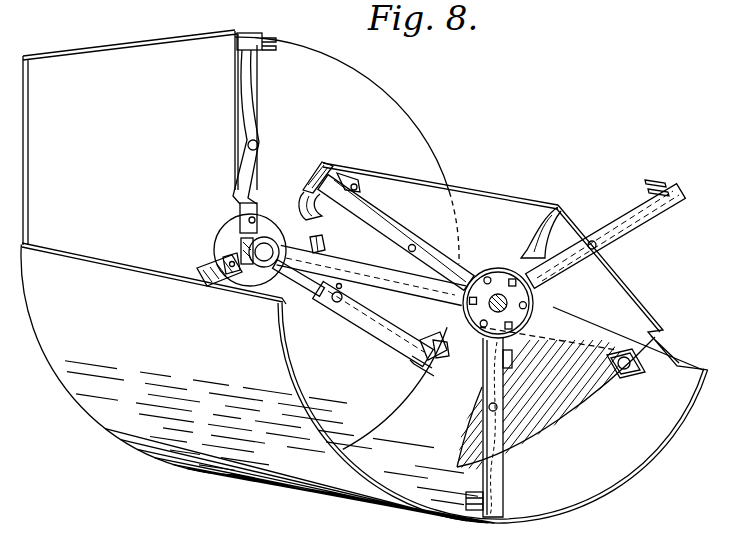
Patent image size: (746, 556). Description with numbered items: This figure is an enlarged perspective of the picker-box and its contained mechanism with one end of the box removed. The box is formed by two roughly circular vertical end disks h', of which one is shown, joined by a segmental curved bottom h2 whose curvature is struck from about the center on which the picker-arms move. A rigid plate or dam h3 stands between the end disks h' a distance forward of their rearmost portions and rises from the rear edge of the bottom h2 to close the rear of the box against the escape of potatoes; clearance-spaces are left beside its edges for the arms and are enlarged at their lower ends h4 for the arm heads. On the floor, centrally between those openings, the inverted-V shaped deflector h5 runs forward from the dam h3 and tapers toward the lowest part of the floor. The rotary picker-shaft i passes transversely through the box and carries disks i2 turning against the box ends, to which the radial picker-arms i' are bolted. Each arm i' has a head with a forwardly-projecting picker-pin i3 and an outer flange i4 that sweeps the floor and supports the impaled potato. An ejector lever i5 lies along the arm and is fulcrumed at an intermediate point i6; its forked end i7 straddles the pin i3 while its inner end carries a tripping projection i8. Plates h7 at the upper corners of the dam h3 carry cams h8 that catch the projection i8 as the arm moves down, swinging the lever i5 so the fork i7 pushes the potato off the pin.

The end disk h' is at (240, 252).
The bottom of the picker-box h2 is at (172, 402).
The rear plate or dam h3 is at (483, 200).
The enlarged lower ends of the clearance-spaces h4 is at (666, 347).
The deflector h5 is at (547, 410).
The inwardly-projecting plate h7 is at (330, 162).
The cam or trip h8 is at (299, 213).
The picker-shaft i is at (371, 280).
The picker-arm i' is at (325, 254).
The disk i2 is at (230, 242).
The picker-pin i3 is at (440, 360).
The flange or support i4 is at (680, 185).
The lever i5 is at (245, 88).
The fulcrum point i6 is at (265, 150).
The fork or bifurcated end i7 is at (243, 36).
The tripping projection i8 is at (326, 250).